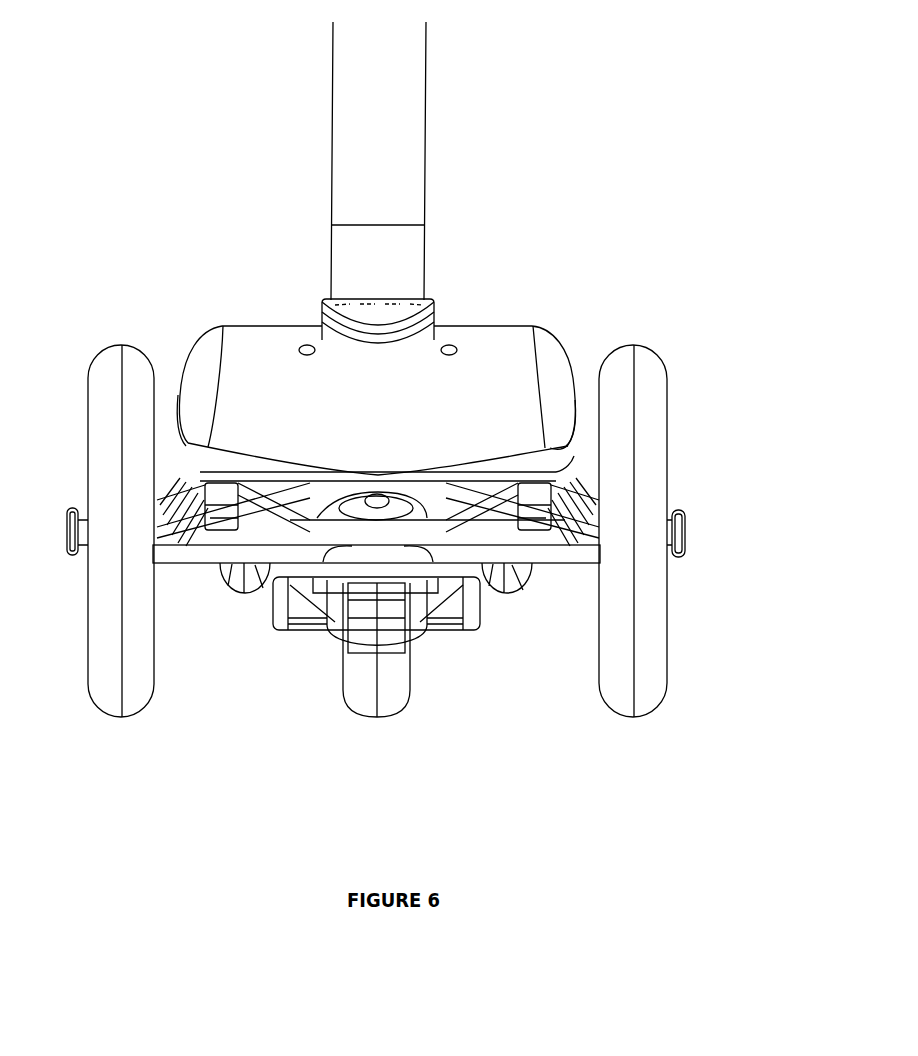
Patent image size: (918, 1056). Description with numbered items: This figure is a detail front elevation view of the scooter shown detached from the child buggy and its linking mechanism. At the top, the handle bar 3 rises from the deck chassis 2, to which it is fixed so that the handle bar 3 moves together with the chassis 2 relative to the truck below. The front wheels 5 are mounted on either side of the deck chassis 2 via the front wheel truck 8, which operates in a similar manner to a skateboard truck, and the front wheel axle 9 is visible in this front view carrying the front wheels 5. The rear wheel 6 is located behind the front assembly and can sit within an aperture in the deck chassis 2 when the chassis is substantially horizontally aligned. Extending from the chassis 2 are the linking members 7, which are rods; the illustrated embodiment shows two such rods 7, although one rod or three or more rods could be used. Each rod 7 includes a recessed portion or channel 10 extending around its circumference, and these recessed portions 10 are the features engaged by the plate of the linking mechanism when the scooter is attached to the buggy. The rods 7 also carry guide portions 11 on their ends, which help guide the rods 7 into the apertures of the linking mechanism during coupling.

The deck chassis 2 is at (490, 337).
The handle bar 3 is at (398, 147).
The front wheels 5 is at (100, 376).
The rear wheel 6 is at (357, 695).
The linking members 7 is at (453, 633).
The truck 8 is at (282, 503).
The front wheel axle 9 is at (280, 620).
The recessed portion 10 is at (182, 563).
The guide portions 11 is at (213, 563).